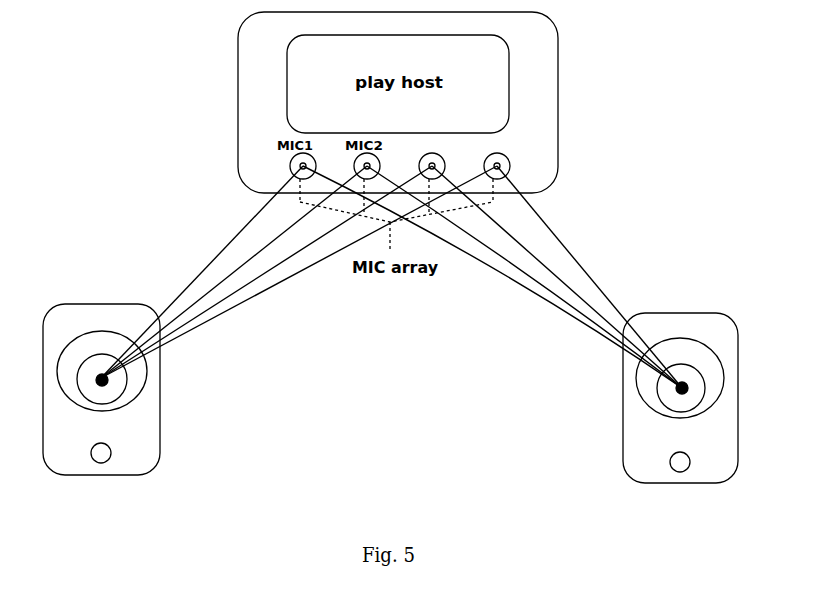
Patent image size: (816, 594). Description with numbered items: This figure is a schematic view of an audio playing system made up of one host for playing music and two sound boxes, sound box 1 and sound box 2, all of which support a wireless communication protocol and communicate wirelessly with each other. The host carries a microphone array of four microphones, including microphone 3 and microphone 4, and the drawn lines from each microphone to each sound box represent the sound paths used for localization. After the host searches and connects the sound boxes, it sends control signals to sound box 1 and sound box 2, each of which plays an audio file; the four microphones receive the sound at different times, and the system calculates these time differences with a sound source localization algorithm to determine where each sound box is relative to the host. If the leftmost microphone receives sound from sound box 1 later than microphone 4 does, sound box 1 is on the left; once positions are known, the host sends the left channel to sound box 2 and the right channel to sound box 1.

The sound box 1 is at (101, 404).
The sound box 2 is at (680, 412).
The microphone 3 is at (437, 158).
The microphone 4 is at (505, 158).